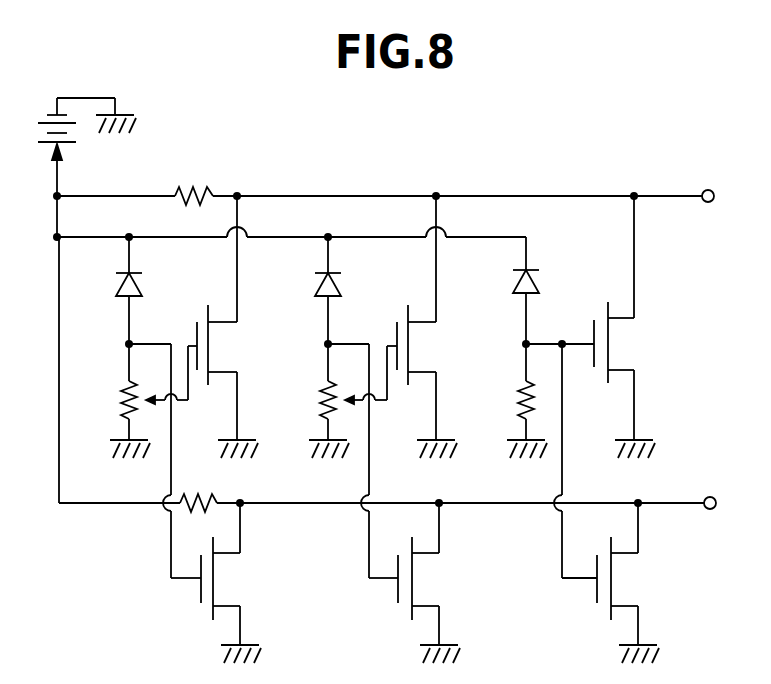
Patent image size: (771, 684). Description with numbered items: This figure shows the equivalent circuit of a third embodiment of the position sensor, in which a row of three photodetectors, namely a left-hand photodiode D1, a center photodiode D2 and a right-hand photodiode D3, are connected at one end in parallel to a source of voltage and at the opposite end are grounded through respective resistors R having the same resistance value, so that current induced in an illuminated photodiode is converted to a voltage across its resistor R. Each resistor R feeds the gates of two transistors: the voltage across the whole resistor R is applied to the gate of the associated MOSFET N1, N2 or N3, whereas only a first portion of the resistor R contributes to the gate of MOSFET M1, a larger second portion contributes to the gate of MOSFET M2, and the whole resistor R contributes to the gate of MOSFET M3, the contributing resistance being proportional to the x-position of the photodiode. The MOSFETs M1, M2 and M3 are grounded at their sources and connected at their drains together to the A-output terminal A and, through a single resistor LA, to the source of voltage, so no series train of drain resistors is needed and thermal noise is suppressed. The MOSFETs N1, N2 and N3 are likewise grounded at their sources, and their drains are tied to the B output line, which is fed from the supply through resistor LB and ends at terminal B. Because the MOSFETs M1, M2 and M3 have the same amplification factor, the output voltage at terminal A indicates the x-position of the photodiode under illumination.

The resistor LA is at (197, 186).
The load resistor B LB is at (214, 494).
The left-hand photodiode D1 is at (146, 282).
The center photodiode D2 is at (345, 282).
The right-hand photodiode D3 is at (544, 280).
The MOSFET M1 is at (242, 348).
The MOSFET M2 is at (442, 348).
The MOSFET M3 is at (640, 346).
The MOSFET N1 is at (243, 584).
The MOSFET N2 is at (444, 584).
The MOSFET N3 is at (642, 584).
The resistor R is at (114, 400).
The A-output terminal A is at (397, 197).
The terminal B is at (398, 504).